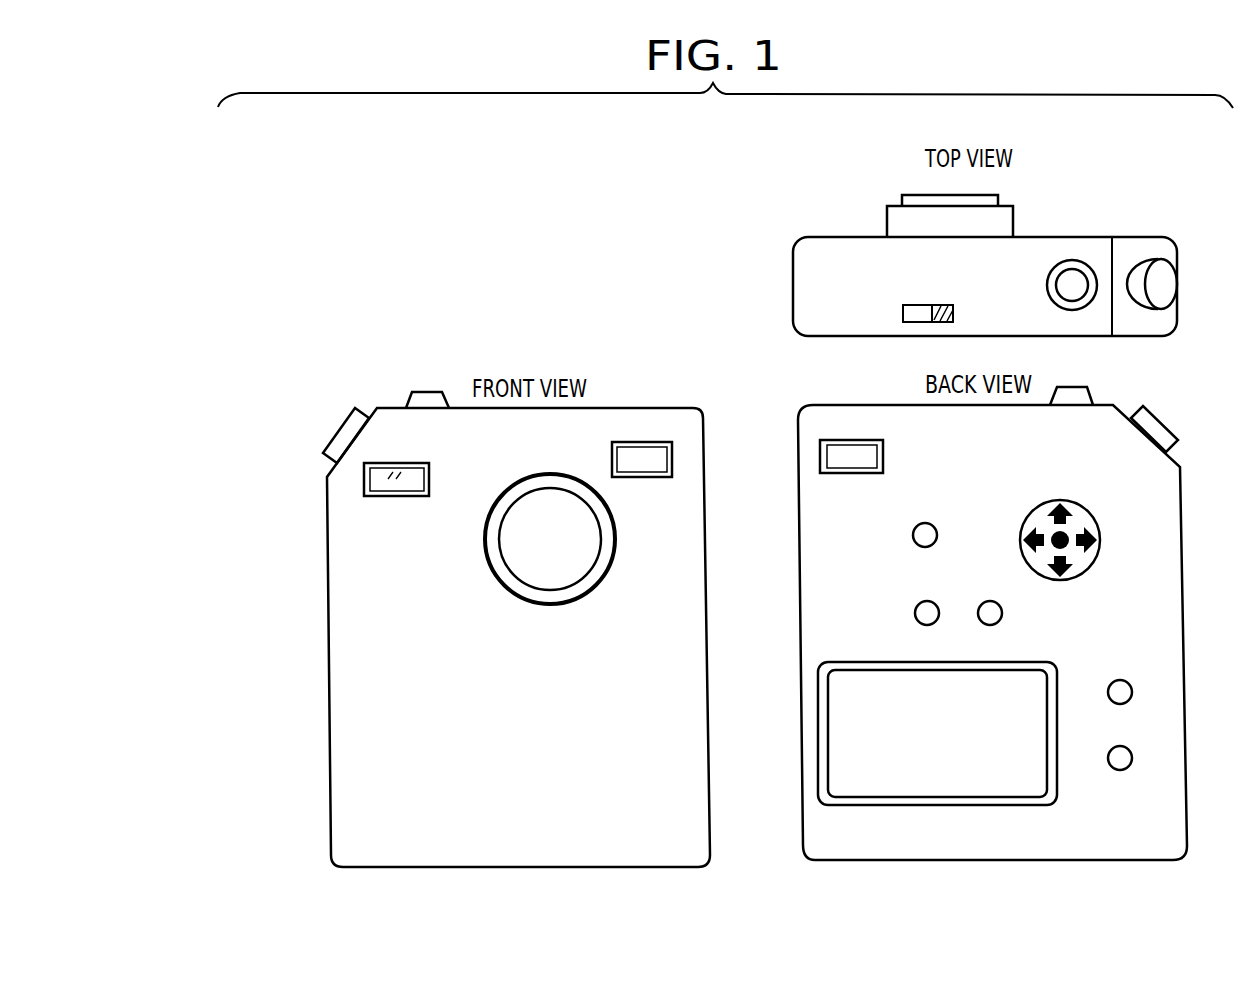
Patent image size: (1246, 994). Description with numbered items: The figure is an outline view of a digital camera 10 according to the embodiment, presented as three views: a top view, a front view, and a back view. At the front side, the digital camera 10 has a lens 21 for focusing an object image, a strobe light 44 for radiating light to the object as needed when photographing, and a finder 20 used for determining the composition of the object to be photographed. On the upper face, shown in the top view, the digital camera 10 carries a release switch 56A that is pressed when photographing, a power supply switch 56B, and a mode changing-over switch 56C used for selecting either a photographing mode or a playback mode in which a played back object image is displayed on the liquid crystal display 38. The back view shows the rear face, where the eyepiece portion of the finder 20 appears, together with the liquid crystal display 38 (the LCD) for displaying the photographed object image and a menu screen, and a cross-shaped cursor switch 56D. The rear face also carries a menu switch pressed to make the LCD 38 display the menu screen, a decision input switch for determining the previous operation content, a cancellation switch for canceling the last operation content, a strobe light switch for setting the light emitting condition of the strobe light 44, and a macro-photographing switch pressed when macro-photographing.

The digital camera 10 is at (550, 192).
The finder 20 is at (825, 435).
The lens 21 is at (518, 538).
The liquid crystal display 38 is at (890, 793).
The strobe light 44 is at (363, 475).
The release switch 56A is at (1068, 278).
The power supply switch 56B is at (917, 303).
The mode changing-over switch 56C is at (1160, 280).
The cross-shaped cursor switch 56D is at (1085, 568).